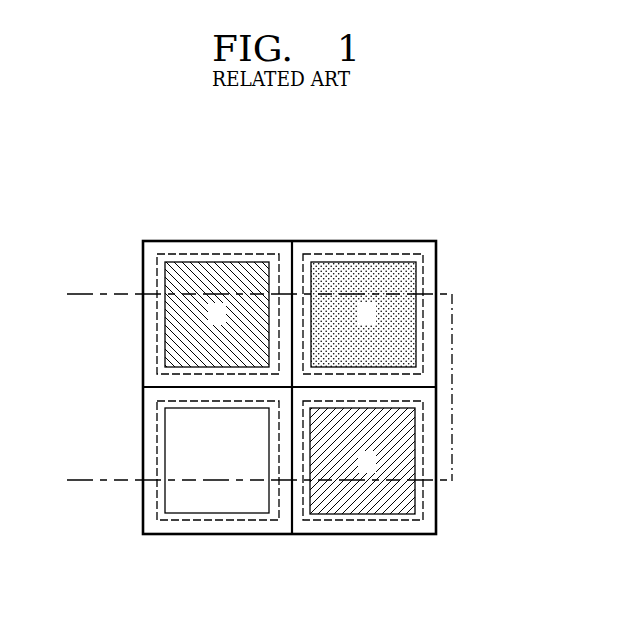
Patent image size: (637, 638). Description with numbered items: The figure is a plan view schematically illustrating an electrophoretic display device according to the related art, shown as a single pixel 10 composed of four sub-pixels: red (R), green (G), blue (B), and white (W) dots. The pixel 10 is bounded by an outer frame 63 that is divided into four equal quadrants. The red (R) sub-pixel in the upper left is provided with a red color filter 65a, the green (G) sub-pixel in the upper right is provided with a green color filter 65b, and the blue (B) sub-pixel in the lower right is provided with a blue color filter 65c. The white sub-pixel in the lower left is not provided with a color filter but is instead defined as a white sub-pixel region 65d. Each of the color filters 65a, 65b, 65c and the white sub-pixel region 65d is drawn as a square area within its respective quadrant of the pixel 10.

The pixel unit of related art display 10 is at (452, 234).
The black matrix / pixel boundary 63 is at (142, 355).
The red color filter 65a is at (218, 262).
The green color filter 65b is at (368, 262).
The blue color filter 65c is at (367, 514).
The white sub-pixel region 65d is at (217, 513).